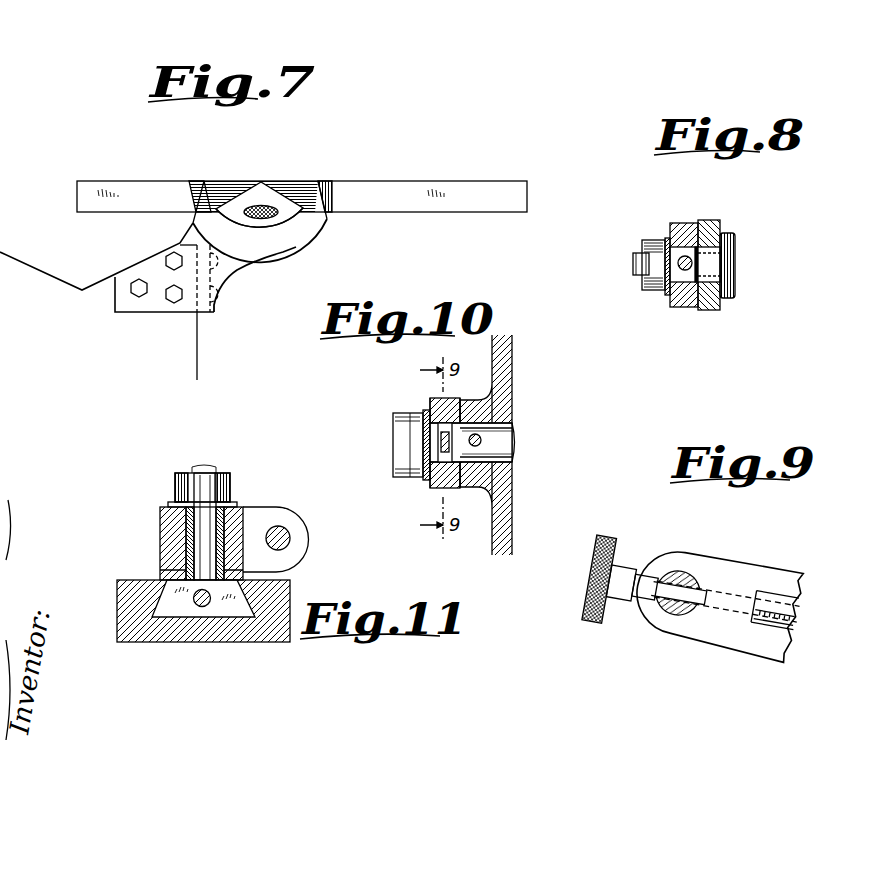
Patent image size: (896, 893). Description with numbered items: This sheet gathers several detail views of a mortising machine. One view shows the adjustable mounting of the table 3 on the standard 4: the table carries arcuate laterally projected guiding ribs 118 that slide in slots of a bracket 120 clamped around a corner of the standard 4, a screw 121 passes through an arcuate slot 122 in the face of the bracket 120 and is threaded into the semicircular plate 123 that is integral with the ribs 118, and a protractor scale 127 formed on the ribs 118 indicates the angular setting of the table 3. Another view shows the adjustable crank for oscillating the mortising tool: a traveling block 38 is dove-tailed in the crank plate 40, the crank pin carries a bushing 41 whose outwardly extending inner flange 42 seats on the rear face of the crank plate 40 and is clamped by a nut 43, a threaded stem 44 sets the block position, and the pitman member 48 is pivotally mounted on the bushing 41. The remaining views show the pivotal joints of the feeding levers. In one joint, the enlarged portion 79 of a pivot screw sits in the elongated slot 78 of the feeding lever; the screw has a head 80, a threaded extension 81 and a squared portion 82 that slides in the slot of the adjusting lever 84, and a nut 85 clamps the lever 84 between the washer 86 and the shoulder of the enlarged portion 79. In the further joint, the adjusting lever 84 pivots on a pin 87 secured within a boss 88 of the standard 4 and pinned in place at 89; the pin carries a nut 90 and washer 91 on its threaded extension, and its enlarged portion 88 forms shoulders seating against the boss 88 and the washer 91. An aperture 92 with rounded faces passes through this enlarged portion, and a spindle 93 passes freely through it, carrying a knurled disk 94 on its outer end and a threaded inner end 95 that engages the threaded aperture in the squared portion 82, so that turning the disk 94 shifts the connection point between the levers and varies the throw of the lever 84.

In FIG. 7, the table 3 is at (445, 190).
In FIG. 7, the frame or standard 4 is at (162, 333).
In FIG. 10, the frame or standard 4 is at (502, 515).
In FIG. 11, the traveling block 38 is at (175, 612).
In FIG. 11, the crank plate 40 is at (278, 600).
In FIG. 11, the bushing 41 is at (185, 530).
In FIG. 11, the inner flange 42 is at (158, 576).
In FIG. 11, the nut 43 is at (225, 472).
In FIG. 11, the threaded stem 44 is at (205, 608).
In FIG. 11, the pitman member 48 is at (262, 518).
In FIG. 8, the elongated slot 78 is at (708, 310).
In FIG. 8, the enlarged portion 79 is at (712, 232).
In FIG. 8, the head 80 is at (740, 263).
In FIG. 8, the threaded extension 81 is at (630, 262).
In FIG. 8, the squared portion 82 is at (677, 250).
In FIG. 8, the adjusting lever 84 is at (690, 307).
In FIG. 9, the adjusting lever 84 is at (768, 580).
In FIG. 8, the nut 85 is at (648, 292).
In FIG. 8, the washer 86 is at (666, 296).
In FIG. 10, the pin 87 is at (520, 447).
In FIG. 10, the boss 88 is at (440, 432).
In FIG. 9, the boss 88 is at (680, 575).
In FIG. 10, the pinning 89 is at (480, 440).
In FIG. 10, the nut 90 is at (396, 470).
In FIG. 10, the washer 91 is at (423, 478).
In FIG. 10, the aperture 92 is at (440, 441).
In FIG. 9, the aperture 92 is at (700, 586).
In FIG. 9, the spindle 93 is at (660, 602).
In FIG. 9, the knurled disk 94 is at (582, 612).
In FIG. 9, the threaded inner end 95 is at (797, 612).
In FIG. 7, the arcuate guiding ribs 118 is at (325, 200).
In FIG. 7, the bracket 120 is at (232, 277).
In FIG. 7, the screw 121 is at (260, 219).
In FIG. 7, the arcuate slot 122 is at (270, 207).
In FIG. 7, the semicircular plate 123 is at (228, 186).
In FIG. 7, the protractor scale 127 is at (198, 183).